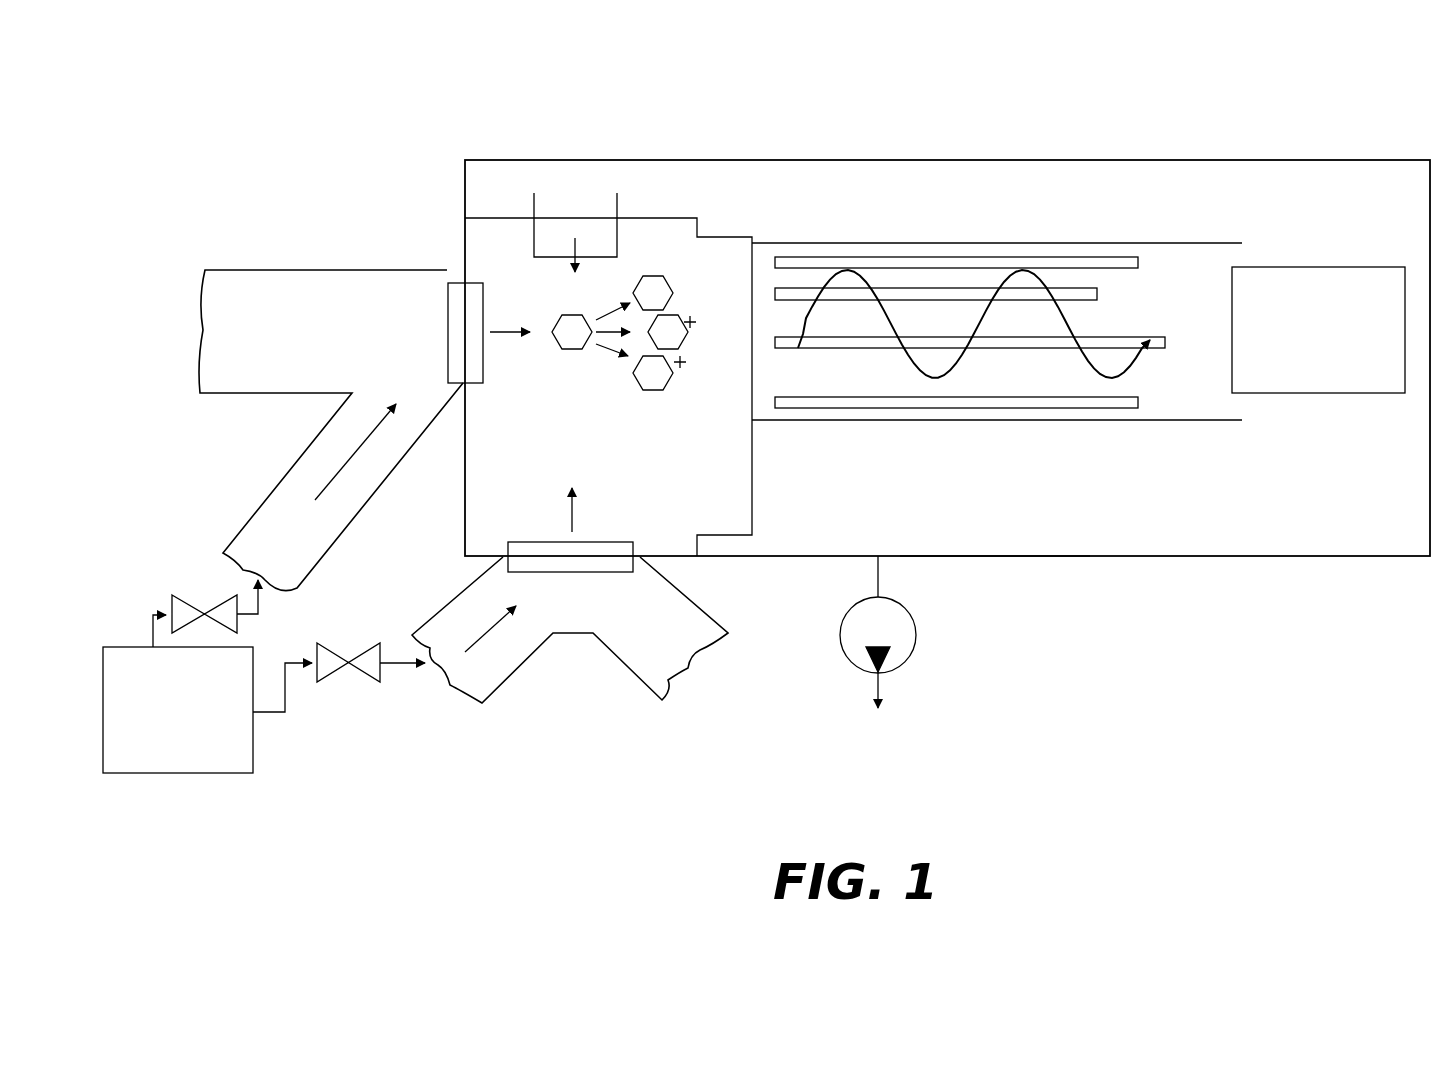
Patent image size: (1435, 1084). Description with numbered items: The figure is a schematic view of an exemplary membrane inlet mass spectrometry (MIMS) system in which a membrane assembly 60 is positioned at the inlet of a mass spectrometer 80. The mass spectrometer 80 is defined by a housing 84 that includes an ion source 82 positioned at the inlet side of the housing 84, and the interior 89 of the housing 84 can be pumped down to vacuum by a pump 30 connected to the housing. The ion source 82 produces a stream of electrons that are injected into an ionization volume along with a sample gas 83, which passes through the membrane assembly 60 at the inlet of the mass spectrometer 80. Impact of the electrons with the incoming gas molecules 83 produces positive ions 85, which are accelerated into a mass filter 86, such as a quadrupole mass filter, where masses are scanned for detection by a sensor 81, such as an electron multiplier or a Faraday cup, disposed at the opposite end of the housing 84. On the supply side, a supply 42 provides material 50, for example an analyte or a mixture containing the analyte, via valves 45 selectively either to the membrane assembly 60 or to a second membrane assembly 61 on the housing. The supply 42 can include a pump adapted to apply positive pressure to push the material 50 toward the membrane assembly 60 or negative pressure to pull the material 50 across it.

The pump 30 is at (838, 633).
The supply 42 is at (153, 773).
The valves 45 is at (175, 596).
The material 50 is at (300, 546).
The membrane assembly 60 is at (444, 288).
The membrane assembly 61 is at (533, 541).
The mass spectrometer 80 is at (1035, 156).
The sensor 81 is at (1298, 287).
The ion source 82 is at (548, 205).
The sample gas 83 is at (572, 352).
The housing 84 is at (1038, 557).
The positive ions 85 is at (657, 289).
The mass filter 86 is at (900, 263).
The interior 89 is at (993, 497).